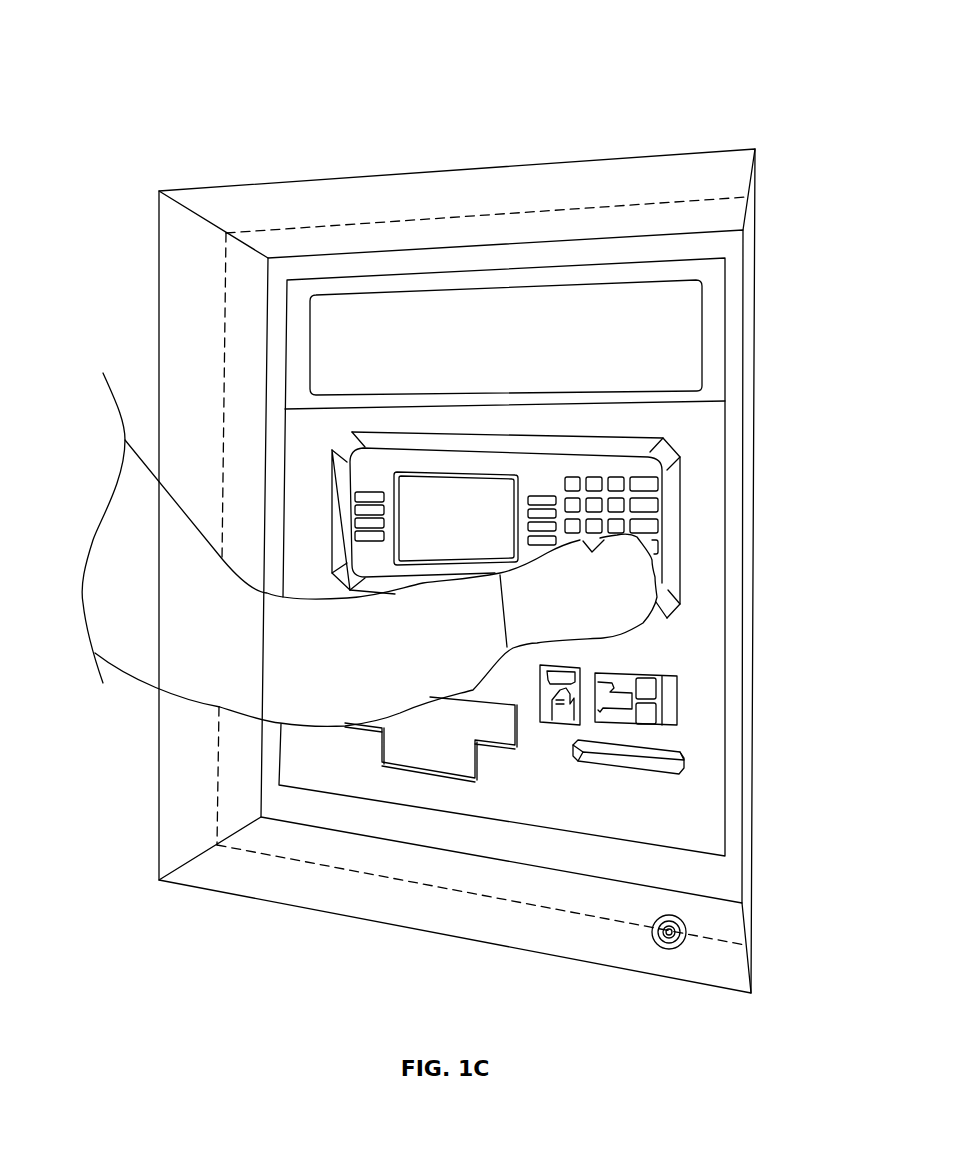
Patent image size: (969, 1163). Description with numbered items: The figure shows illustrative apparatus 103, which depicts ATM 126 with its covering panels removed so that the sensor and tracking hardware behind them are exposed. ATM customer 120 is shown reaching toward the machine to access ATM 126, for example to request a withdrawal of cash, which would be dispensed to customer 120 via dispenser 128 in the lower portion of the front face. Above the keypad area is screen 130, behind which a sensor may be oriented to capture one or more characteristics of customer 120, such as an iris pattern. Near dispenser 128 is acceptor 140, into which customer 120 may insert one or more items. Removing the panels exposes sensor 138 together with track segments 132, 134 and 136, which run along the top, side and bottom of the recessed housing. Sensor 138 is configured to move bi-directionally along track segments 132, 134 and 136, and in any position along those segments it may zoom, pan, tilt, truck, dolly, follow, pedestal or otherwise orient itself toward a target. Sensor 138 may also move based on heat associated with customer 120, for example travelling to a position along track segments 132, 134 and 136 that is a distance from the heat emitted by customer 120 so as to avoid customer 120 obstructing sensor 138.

The apparatus 103 is at (218, 72).
The ATM customer 120 is at (130, 478).
The ATM 126 is at (692, 650).
The dispenser 128 is at (437, 750).
The screen 130 is at (677, 358).
The track segment 132 is at (552, 915).
The track segment 134 is at (217, 763).
The track segment 136 is at (445, 218).
The sensor 138 is at (668, 950).
The acceptor 140 is at (688, 762).